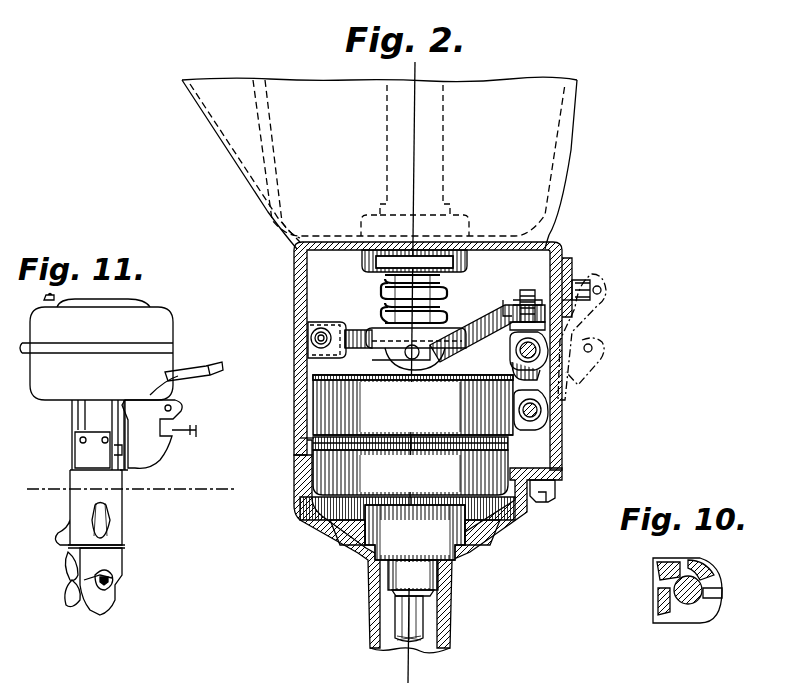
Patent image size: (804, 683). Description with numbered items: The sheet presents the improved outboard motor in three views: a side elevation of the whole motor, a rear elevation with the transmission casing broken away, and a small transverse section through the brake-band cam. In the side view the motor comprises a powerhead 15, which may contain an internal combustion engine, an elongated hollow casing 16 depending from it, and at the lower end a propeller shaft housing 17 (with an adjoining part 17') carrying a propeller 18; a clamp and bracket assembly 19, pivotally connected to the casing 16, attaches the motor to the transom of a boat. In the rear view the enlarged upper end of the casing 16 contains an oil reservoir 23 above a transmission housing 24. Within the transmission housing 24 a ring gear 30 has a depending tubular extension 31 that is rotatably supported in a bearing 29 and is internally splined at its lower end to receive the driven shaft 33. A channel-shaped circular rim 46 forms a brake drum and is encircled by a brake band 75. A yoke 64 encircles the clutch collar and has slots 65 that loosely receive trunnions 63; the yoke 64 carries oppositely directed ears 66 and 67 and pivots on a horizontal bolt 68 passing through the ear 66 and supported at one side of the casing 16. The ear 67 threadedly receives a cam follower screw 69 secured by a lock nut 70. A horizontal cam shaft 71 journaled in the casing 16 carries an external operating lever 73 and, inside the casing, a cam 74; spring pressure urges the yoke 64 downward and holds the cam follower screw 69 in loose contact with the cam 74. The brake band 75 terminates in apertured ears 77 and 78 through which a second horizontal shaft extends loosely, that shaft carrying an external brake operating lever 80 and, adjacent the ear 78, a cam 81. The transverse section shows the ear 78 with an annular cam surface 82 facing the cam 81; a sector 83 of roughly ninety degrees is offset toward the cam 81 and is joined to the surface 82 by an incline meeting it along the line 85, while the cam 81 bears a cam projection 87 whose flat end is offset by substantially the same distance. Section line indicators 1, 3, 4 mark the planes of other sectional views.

In FIG. 2, the section line 1- 1 is at (426, 73).
In FIG. 2, the section line 3- 3 is at (268, 297).
In FIG. 2, the section line 4- 4 is at (268, 351).
In FIG. 11, the powerhead 15 is at (160, 322).
In FIG. 2, the casing 16 is at (296, 268).
In FIG. 11, the casing 16 is at (110, 485).
In FIG. 11, the propeller shaft housing 17 is at (92, 589).
In FIG. 11, the propeller blade 17' is at (57, 566).
In FIG. 11, the propeller 18 is at (66, 594).
In FIG. 11, the clamp and bracket assembly 19 is at (177, 408).
In FIG. 2, the oil reservoir 23 is at (518, 150).
In FIG. 2, the transmission housing 24 is at (340, 263).
In FIG. 11, the transmission housing 24 is at (90, 458).
In FIG. 2, the bearing 29 is at (402, 526).
In FIG. 2, the ring gear 30 is at (404, 467).
In FIG. 2, the tubular extension 31 is at (392, 584).
In FIG. 2, the driven shaft 33 is at (425, 620).
In FIG. 11, the driven shaft 33 is at (110, 520).
In FIG. 2, the circular rim 46 is at (310, 440).
In FIG. 2, the trunnions 63 is at (405, 352).
In FIG. 2, the yoke 64 is at (374, 330).
In FIG. 2, the slots 65 is at (420, 352).
In FIG. 2, the ear 66 is at (333, 330).
In FIG. 2, the ear 67 is at (510, 306).
In FIG. 2, the horizontal bolt 68 is at (311, 339).
In FIG. 2, the cam follower screw 69 is at (518, 331).
In FIG. 2, the lock nut 70 is at (524, 296).
In FIG. 2, the cam shaft 71 is at (514, 350).
In FIG. 2, the operating lever 73 is at (600, 285).
In FIG. 2, the cam 74 is at (514, 364).
In FIG. 2, the brake band 75 is at (404, 408).
In FIG. 2, the apertured ear 77 is at (545, 420).
In FIG. 10, the apertured ear 78 is at (662, 624).
In FIG. 2, the brake operating lever 80 is at (592, 387).
In FIG. 10, the cam 81 is at (704, 578).
In FIG. 10, the annular cam surface 82 is at (660, 603).
In FIG. 10, the sector 83 is at (668, 560).
In FIG. 10, the line 85 is at (702, 560).
In FIG. 10, the cam projection 87 is at (722, 593).